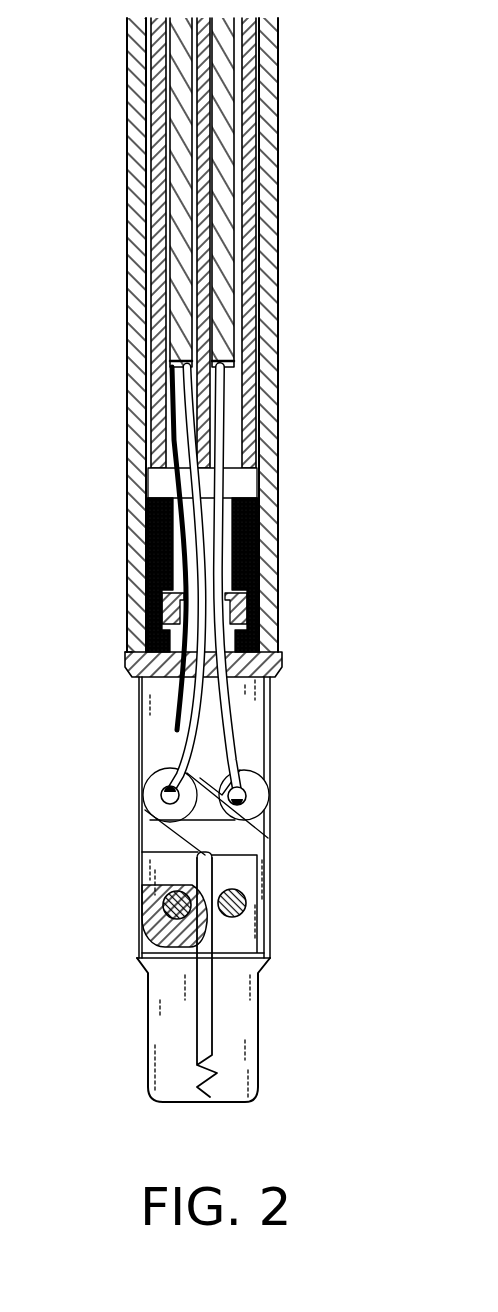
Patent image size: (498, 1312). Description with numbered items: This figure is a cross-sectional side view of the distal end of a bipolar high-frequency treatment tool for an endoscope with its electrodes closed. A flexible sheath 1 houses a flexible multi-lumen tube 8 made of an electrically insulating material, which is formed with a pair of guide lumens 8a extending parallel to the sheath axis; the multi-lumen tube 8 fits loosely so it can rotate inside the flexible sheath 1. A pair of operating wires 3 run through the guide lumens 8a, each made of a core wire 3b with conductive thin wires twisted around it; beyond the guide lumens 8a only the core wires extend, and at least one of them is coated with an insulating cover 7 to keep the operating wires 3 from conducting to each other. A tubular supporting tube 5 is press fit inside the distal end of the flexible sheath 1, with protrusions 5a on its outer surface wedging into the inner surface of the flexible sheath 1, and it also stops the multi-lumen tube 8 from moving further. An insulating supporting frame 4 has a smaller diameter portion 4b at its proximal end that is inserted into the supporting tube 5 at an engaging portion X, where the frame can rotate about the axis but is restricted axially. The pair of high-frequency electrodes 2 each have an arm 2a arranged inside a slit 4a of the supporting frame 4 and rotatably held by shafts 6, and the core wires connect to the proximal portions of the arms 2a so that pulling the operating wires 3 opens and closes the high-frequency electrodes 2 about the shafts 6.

The flexible sheath 1 is at (272, 190).
The high-frequency electrodes 2 is at (167, 1031).
The arm 2a is at (152, 862).
The operating wires 3 is at (177, 84).
The core wire 3b is at (230, 722).
The supporting frame 4 is at (283, 662).
The slit 4a is at (258, 762).
The smaller diameter portion 4b is at (279, 620).
The supporting tube 5 is at (263, 518).
The protrusions 5a is at (147, 583).
The shafts 6 is at (165, 908).
The insulating cover 7 is at (173, 709).
The multi-lumen tube 8 is at (157, 185).
The guide lumens 8a is at (158, 268).
The engaging portion X is at (126, 642).